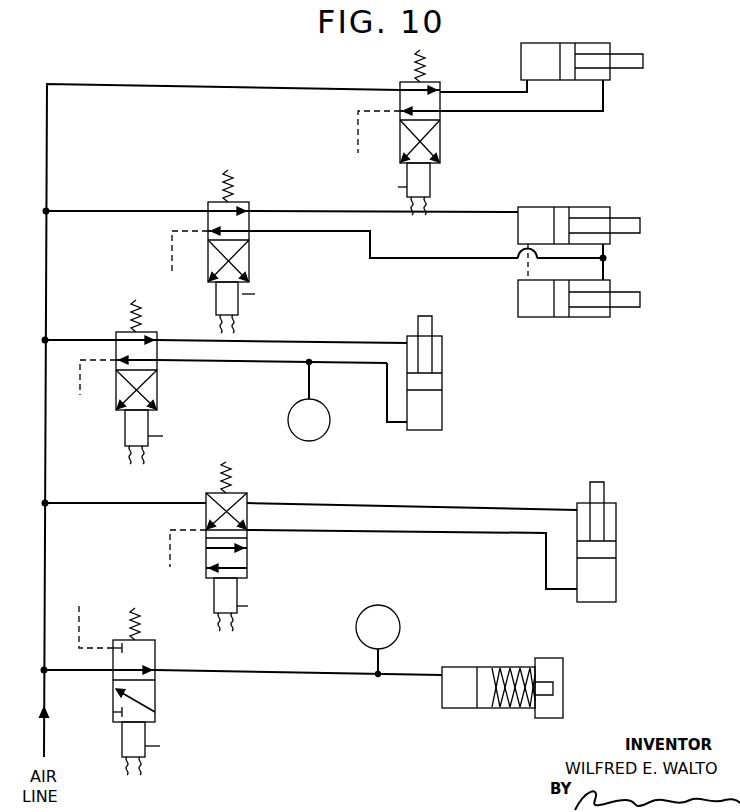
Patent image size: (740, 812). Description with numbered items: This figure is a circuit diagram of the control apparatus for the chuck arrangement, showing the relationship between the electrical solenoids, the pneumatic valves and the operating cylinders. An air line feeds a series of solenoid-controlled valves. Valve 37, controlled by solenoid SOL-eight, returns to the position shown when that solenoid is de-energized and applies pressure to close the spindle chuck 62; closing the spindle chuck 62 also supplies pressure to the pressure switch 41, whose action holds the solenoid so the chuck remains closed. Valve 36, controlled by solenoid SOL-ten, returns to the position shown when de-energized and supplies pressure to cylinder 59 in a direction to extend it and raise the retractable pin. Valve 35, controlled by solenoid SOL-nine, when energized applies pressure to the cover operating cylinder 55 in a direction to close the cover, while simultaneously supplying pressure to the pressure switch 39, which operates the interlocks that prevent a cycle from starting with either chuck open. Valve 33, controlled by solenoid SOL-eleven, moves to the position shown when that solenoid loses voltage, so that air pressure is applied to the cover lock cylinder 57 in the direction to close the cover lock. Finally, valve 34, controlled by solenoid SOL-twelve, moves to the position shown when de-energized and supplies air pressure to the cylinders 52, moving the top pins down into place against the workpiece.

The valve 33 is at (433, 80).
The valve 34 is at (244, 202).
The valve 35 is at (152, 332).
The valve 36 is at (242, 493).
The valve 37 is at (147, 642).
The pressure switch 39 is at (322, 437).
The pressure switch 41 is at (392, 608).
The cylinders 52 is at (535, 207).
The cover operating cylinder 55 is at (442, 405).
The cover lock cylinder 57 is at (545, 43).
The cylinder 59 is at (612, 578).
The spindle chuck 62 is at (535, 664).